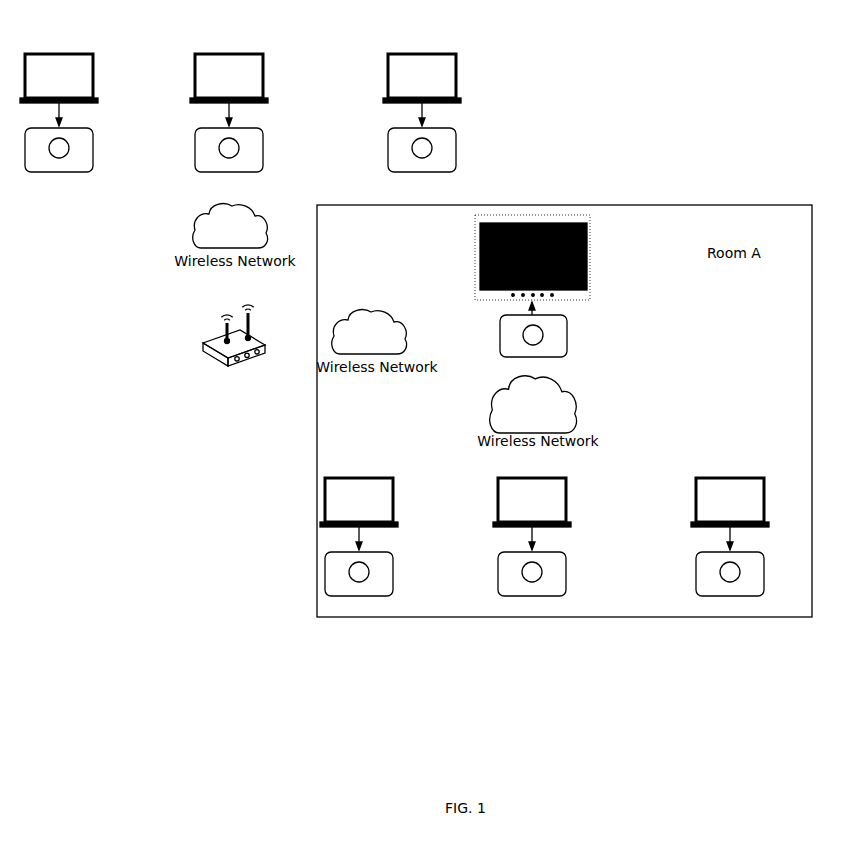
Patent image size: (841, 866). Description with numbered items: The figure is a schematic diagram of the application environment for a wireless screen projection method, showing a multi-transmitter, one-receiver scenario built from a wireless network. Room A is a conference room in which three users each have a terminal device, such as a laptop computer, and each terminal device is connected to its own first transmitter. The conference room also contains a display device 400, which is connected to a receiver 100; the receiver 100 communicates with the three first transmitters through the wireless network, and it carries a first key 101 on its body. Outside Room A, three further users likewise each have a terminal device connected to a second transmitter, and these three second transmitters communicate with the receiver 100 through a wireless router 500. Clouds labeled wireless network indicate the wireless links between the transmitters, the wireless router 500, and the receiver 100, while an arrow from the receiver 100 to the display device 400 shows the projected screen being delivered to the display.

The receiver 100 is at (513, 357).
The first key 101 is at (528, 334).
The display device 400 is at (587, 270).
The wireless router 500 is at (266, 344).